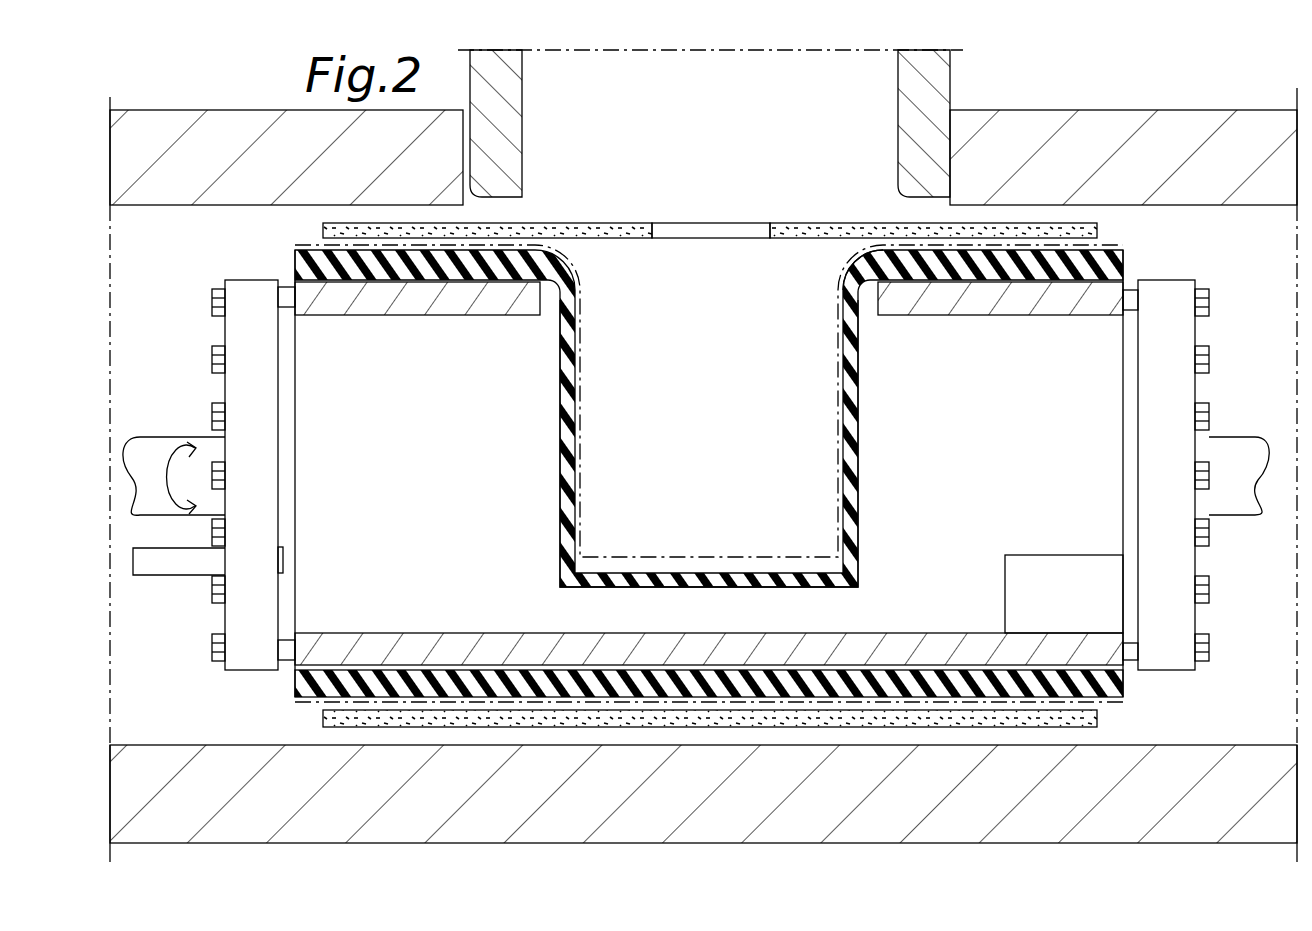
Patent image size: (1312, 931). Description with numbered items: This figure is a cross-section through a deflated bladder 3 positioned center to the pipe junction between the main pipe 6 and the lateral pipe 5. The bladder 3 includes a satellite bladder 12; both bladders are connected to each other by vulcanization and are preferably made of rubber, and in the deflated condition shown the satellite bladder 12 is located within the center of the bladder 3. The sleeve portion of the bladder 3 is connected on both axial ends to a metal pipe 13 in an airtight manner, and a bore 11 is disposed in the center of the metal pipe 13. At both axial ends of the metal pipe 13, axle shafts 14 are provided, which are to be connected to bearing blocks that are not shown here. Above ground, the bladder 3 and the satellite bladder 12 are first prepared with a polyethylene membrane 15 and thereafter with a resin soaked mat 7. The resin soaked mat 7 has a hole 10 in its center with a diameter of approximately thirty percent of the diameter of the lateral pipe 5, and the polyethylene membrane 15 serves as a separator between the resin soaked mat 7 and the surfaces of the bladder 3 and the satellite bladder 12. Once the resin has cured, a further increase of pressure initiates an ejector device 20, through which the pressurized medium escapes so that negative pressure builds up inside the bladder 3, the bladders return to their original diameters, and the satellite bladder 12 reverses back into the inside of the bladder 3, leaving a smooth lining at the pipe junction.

The bladder 3 is at (960, 250).
The lateral pipe 5 is at (497, 77).
The main pipe 6 is at (1109, 152).
The resin soaked mat 7 is at (590, 232).
The hole 10 is at (738, 230).
The bore 11 is at (868, 295).
The satellite bladder 12 is at (635, 573).
The metal pipe 13 is at (992, 298).
The axle shaft 14 is at (144, 455).
The polyethylene membrane 15 is at (307, 245).
The ejector device 20 is at (1082, 617).